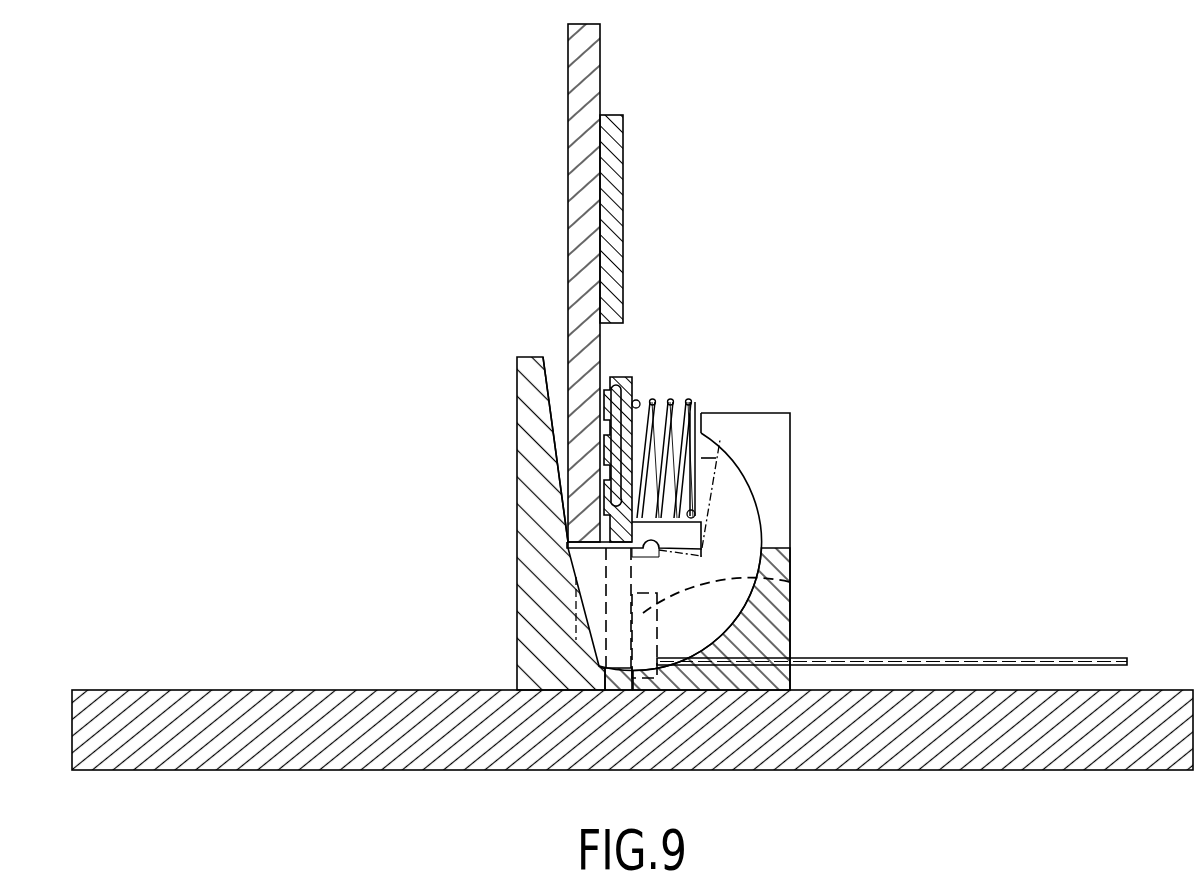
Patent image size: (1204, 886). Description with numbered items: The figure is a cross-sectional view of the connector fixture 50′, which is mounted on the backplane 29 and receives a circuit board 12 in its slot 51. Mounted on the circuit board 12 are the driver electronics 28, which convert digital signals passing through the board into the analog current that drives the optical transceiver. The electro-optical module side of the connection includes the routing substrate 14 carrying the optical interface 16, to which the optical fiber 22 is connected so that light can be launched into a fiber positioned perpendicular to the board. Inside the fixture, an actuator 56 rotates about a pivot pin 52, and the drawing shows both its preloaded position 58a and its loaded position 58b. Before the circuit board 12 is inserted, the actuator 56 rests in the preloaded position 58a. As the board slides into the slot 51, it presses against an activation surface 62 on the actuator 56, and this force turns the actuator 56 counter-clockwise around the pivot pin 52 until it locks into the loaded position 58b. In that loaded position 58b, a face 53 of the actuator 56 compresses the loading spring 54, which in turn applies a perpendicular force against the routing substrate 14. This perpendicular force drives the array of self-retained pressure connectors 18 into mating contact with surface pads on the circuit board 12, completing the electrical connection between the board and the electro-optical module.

The circuit board 12 is at (578, 79).
The routing substrate 14 is at (615, 377).
The optical interface 16 is at (790, 582).
The array of self-retained pressure connectors 18 is at (672, 418).
The optical fiber 22 is at (953, 658).
The driver electronics 28 is at (613, 188).
The backplane 29 is at (130, 690).
The connector fixture 50′ is at (527, 398).
The slot 51 is at (566, 507).
The pivot pin 52 is at (662, 546).
The face 53 is at (703, 458).
The loading spring 54 is at (698, 413).
The actuator 56 is at (710, 624).
The preloaded position 58a is at (574, 611).
The loaded position 58b is at (597, 652).
The activation surface 62 is at (592, 548).